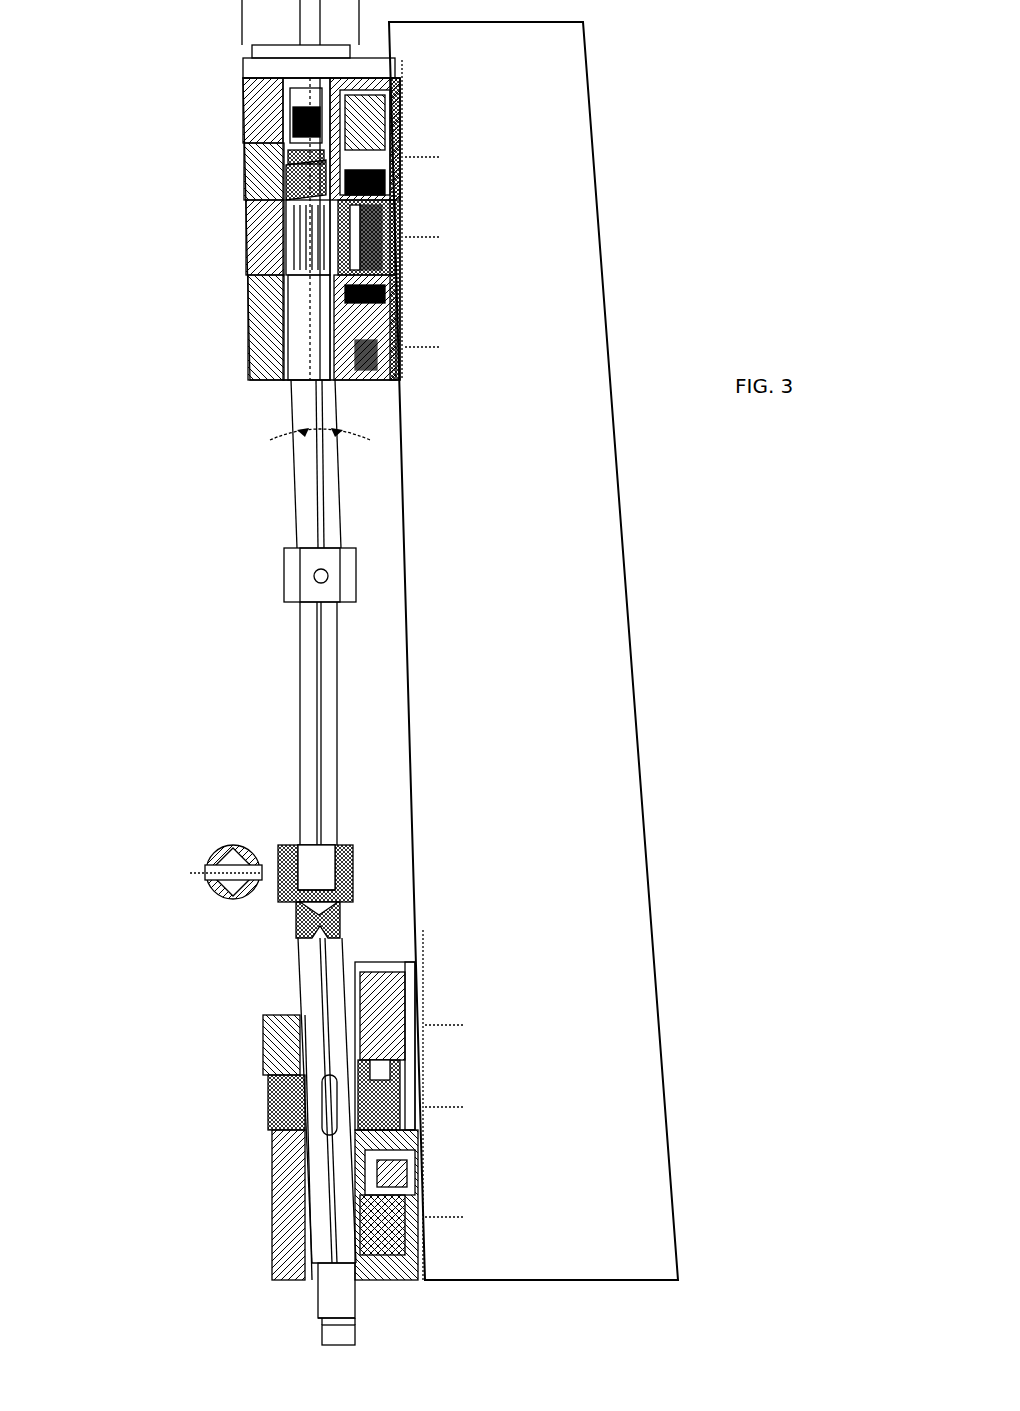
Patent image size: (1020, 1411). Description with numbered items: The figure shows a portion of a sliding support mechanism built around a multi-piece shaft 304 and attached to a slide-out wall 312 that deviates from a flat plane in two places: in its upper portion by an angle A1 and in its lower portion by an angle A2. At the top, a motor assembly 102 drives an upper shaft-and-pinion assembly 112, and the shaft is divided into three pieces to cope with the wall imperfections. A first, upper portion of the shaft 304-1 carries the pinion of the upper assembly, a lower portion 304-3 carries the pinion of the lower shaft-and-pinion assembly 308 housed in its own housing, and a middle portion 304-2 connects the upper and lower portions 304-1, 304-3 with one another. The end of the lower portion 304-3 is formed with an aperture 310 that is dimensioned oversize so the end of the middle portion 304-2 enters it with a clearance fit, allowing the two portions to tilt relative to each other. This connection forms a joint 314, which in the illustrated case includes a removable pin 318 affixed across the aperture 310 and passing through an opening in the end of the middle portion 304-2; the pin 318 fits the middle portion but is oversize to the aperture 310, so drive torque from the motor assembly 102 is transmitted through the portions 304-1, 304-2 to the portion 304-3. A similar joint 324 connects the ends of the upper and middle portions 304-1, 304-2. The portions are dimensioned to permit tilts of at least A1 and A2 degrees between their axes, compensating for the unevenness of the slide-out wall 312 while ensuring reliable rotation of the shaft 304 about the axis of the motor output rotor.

The motor assembly 102 is at (256, 3).
The shaft-and-pinion assembly 112 is at (205, 200).
The multi-piece shaft 304 is at (250, 440).
The first (upper) portion of the shaft 304-1 is at (285, 488).
The middle portion of the shaft 304-2 is at (234, 723).
The lower portion of the shaft 304-3 is at (280, 963).
The lower shaft-and-pinion assembly 308 is at (258, 1163).
The aperture 310 is at (226, 825).
The slide-out wall 312 is at (533, 651).
The joint 314 is at (363, 880).
The removable pin 318 is at (175, 897).
The joint 324 is at (365, 582).
The angle A1 is at (360, 63).
The angle A2 is at (385, 937).